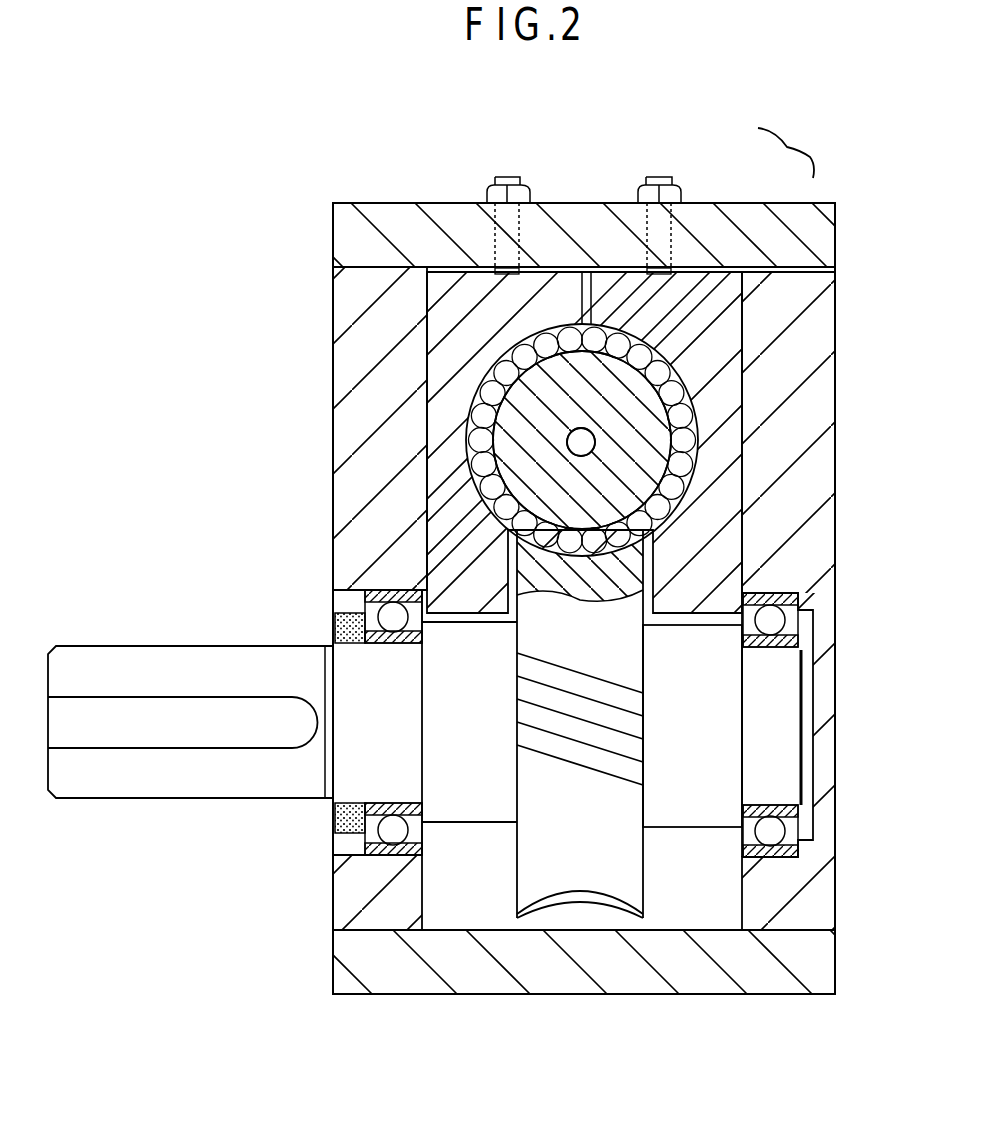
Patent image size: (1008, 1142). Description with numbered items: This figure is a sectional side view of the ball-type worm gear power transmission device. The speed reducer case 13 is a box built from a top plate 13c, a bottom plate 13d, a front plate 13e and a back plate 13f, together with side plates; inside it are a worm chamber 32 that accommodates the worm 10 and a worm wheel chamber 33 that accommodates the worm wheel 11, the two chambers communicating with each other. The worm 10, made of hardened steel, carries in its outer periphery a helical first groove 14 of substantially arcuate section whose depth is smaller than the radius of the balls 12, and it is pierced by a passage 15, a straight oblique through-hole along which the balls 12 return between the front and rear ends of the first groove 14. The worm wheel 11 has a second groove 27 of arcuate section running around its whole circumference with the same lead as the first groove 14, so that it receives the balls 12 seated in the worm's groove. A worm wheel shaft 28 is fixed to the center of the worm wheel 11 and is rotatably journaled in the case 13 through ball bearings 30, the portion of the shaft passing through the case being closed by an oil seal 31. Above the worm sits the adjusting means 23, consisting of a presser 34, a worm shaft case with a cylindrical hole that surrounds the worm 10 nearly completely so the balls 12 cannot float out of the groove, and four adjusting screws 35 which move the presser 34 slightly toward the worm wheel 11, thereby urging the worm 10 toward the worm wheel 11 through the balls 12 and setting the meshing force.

The speed reducer case 13 is at (363, 216).
The top plate 13c is at (407, 220).
The bottom plate 13d is at (390, 975).
The front plate 13e is at (345, 348).
The back plate 13f is at (815, 394).
The worm 10 is at (598, 372).
The worm wheel 11 is at (540, 903).
The balls 12 is at (568, 440).
The first groove 14 is at (478, 478).
The passage 15 is at (466, 408).
The adjusting means 23 is at (794, 151).
The second groove 27 is at (637, 555).
The worm wheel shaft 28 is at (697, 808).
The ball bearings 30 is at (362, 588).
The oil seal 31 is at (340, 613).
The worm chamber 32 is at (732, 382).
The worm wheel chamber 33 is at (480, 875).
The presser 34 is at (683, 296).
The adjusting screws 35 is at (672, 234).